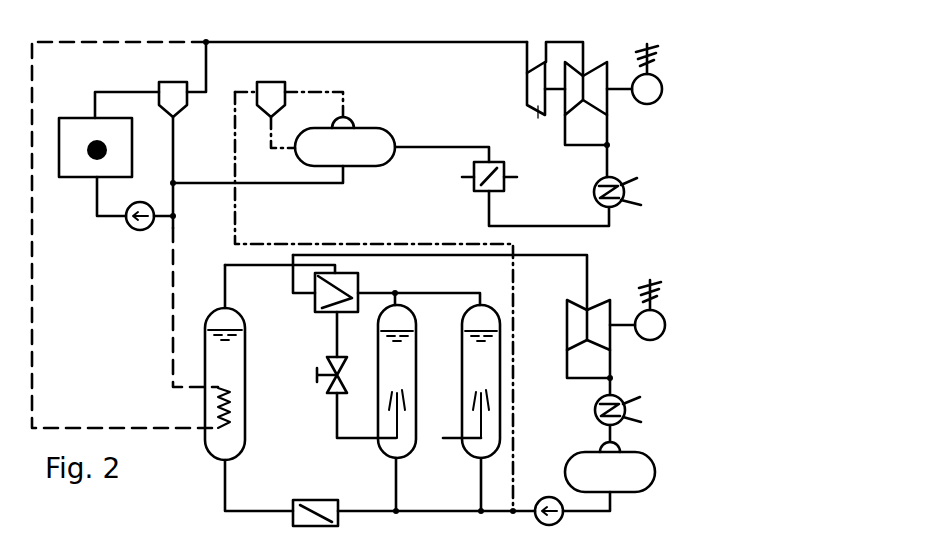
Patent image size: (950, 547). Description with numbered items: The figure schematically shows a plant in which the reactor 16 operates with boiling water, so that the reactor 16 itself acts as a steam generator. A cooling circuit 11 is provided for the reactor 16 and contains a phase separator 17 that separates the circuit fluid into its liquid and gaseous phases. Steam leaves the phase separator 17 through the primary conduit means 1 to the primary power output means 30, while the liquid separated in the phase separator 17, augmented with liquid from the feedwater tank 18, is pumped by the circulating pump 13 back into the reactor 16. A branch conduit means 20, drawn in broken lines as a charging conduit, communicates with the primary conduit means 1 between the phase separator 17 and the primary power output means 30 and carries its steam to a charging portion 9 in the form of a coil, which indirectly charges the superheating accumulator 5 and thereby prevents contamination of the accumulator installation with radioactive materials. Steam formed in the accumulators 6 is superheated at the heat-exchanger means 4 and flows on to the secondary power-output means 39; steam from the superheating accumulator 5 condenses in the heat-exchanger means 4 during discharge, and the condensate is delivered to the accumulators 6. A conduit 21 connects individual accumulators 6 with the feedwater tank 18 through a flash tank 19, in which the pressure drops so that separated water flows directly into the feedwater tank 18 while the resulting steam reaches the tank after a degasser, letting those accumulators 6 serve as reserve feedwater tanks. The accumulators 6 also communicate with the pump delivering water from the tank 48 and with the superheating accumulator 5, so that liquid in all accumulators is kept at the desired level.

The primary conduit means 1 is at (338, 41).
The heat-exchanger means 4 is at (323, 298).
The superheating accumulator 5 is at (210, 358).
The accumulators 6 is at (470, 383).
The charging portion 9 is at (218, 407).
The cooling circuit 11 is at (96, 115).
The circulating pump 13 is at (140, 202).
The reactor 16 is at (124, 150).
The phase separator 17 is at (175, 116).
The feedwater tank 18 is at (385, 147).
The flash tank 19 is at (269, 109).
The branch conduit means 20 is at (33, 216).
The conduit 21 is at (310, 246).
The primary power output means 30 is at (572, 102).
The secondary power-output means 39 is at (573, 310).
The tank 48 is at (582, 465).